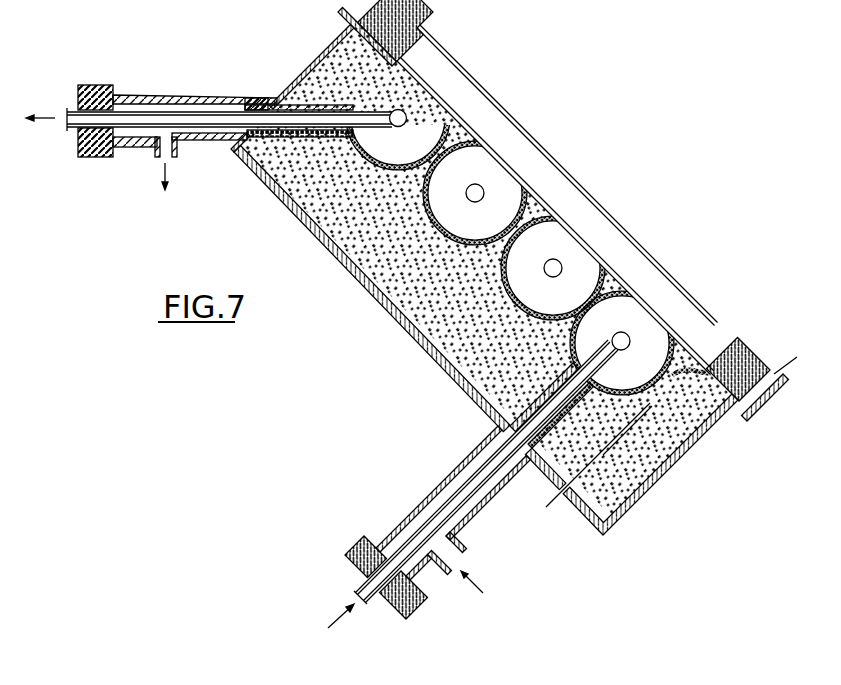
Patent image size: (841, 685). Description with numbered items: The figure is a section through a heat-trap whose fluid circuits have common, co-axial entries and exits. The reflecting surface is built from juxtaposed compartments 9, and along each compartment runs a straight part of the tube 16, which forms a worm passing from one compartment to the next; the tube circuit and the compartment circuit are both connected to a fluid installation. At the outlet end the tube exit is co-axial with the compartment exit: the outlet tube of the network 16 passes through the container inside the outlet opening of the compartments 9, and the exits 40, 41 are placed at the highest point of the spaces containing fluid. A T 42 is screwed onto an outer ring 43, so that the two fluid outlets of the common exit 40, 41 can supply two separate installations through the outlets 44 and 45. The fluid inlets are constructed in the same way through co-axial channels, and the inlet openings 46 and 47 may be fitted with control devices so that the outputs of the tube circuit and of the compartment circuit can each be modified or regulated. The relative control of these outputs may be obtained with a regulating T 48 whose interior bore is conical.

The compartment 9 is at (484, 88).
The tube 16 is at (405, 111).
The exit 40 is at (354, 117).
The exit 41 is at (360, 131).
The T 42 is at (113, 90).
The outer ring 43 is at (312, 84).
The outlet 44 is at (43, 120).
The outlet 45 is at (165, 163).
The inlet opening 46 is at (337, 624).
The inlet opening 47 is at (475, 583).
The regulating T 48 is at (426, 568).